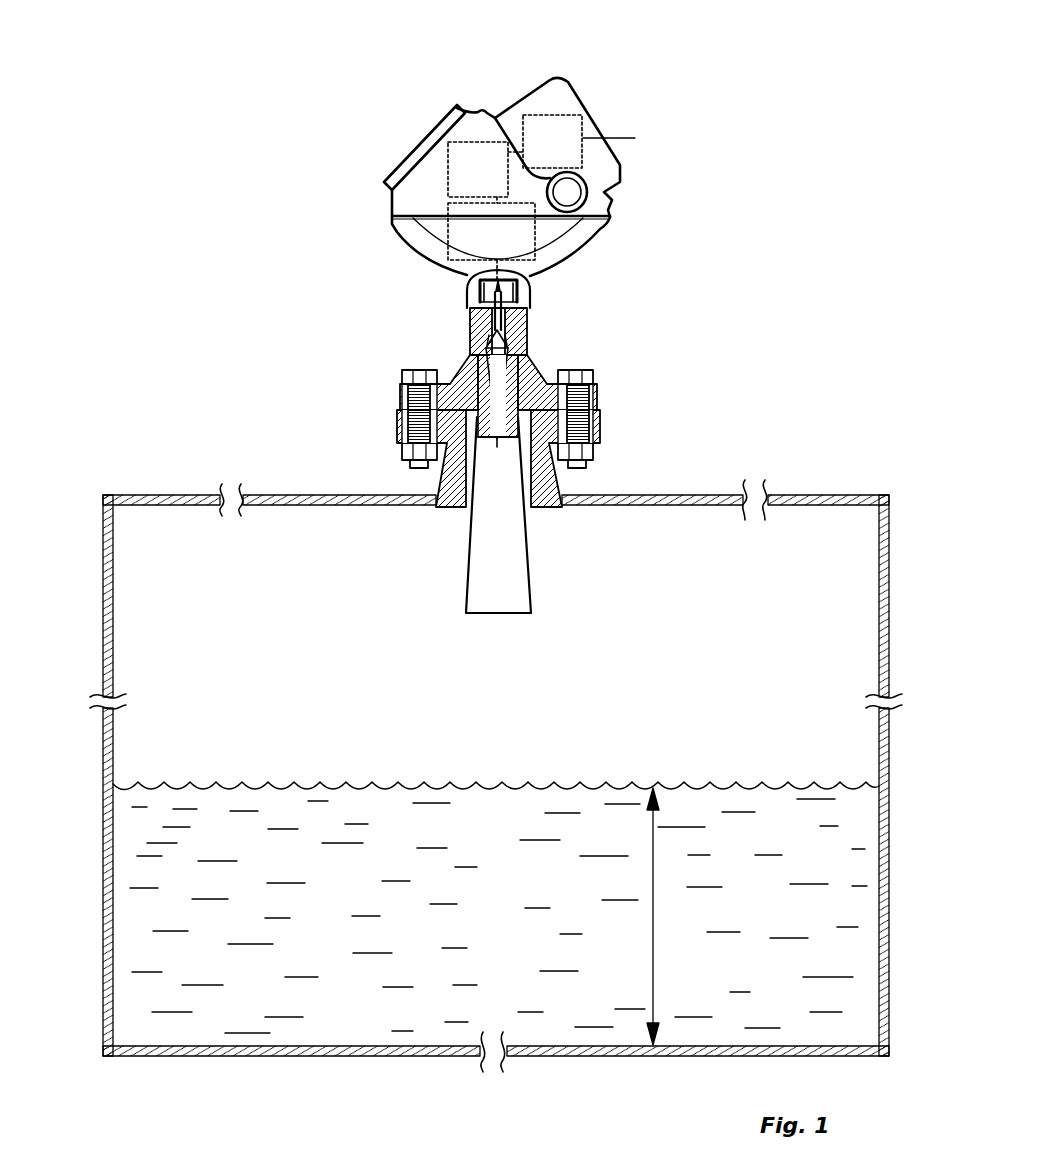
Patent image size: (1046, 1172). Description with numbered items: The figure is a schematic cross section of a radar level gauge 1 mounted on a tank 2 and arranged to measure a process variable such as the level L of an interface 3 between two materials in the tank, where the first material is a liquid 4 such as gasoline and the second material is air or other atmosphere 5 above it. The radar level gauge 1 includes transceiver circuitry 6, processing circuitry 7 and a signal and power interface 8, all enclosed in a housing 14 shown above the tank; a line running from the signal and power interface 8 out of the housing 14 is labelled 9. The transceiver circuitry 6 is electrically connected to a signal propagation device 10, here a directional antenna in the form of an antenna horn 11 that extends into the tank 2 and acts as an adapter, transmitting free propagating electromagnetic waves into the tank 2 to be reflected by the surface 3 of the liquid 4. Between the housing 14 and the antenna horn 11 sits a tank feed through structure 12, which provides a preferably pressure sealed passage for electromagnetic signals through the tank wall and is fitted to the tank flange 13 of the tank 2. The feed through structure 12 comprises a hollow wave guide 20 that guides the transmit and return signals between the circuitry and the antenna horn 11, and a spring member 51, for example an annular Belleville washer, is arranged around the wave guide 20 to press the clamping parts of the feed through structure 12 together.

The radar level gauge 1 is at (690, 125).
The tank 2 is at (673, 493).
The interface 3 is at (252, 782).
The liquid 4 is at (314, 932).
The atmosphere 5 is at (319, 646).
The transceiver circuitry 6 is at (440, 253).
The processing circuitry 7 is at (447, 177).
The signal and power interface 8 is at (560, 114).
The communication line 9 is at (630, 138).
The signal propagation device 10 is at (448, 531).
The antenna horn 11 is at (528, 568).
The tank feed through structure 12 is at (572, 330).
The tank flange 13 is at (566, 490).
The housing 14 is at (587, 252).
The hollow wave guide 20 is at (589, 397).
The spring member 51 is at (475, 340).
The level L is at (663, 916).